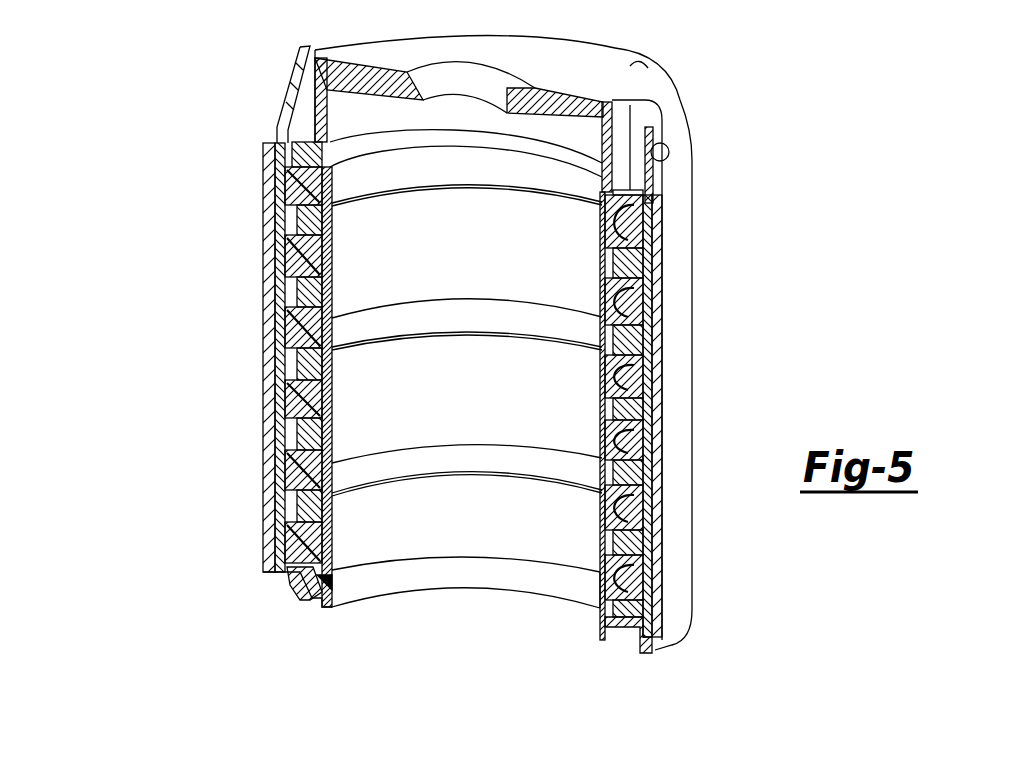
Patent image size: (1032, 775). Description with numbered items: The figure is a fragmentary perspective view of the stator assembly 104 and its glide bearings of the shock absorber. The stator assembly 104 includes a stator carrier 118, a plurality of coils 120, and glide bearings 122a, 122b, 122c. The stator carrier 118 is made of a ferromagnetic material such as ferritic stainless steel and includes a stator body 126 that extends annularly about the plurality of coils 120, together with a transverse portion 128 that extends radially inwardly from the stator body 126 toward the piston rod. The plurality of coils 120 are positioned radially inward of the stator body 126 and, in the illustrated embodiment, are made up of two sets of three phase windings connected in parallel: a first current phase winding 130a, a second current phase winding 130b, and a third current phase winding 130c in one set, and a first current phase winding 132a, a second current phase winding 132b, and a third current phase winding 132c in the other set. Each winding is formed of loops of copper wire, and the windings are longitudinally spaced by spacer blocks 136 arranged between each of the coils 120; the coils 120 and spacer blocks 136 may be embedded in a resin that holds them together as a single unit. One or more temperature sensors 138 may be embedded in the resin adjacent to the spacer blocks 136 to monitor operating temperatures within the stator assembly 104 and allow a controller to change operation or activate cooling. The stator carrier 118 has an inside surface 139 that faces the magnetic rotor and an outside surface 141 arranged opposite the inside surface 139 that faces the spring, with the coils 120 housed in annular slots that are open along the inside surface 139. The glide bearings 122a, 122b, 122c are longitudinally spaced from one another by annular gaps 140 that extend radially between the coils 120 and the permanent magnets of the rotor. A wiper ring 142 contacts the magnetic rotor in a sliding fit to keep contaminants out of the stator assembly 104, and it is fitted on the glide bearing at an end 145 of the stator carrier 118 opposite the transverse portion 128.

The stator assembly 104 is at (78, 326).
The stator carrier 118 is at (699, 224).
The plurality of coils 120 is at (660, 268).
The glide bearing 122a is at (395, 222).
The glide bearing 122b is at (403, 372).
The glide bearing 122c is at (403, 513).
The stator body 126 is at (683, 242).
The transverse portion 128 is at (547, 97).
The first current phase winding 130a is at (300, 183).
The second current phase winding 130b is at (300, 262).
The third current phase winding 130c is at (300, 330).
The first current phase winding 132a is at (300, 403).
The second current phase winding 132b is at (300, 474).
The third current phase winding 132c is at (300, 546).
The spacer blocks 136 is at (303, 220).
The temperature sensors 138 is at (640, 442).
The inside surface 139 is at (562, 180).
The annular gaps 140 is at (370, 255).
The outside surface 141 is at (665, 410).
The wiper ring 142 is at (553, 578).
The end 145 is at (660, 650).